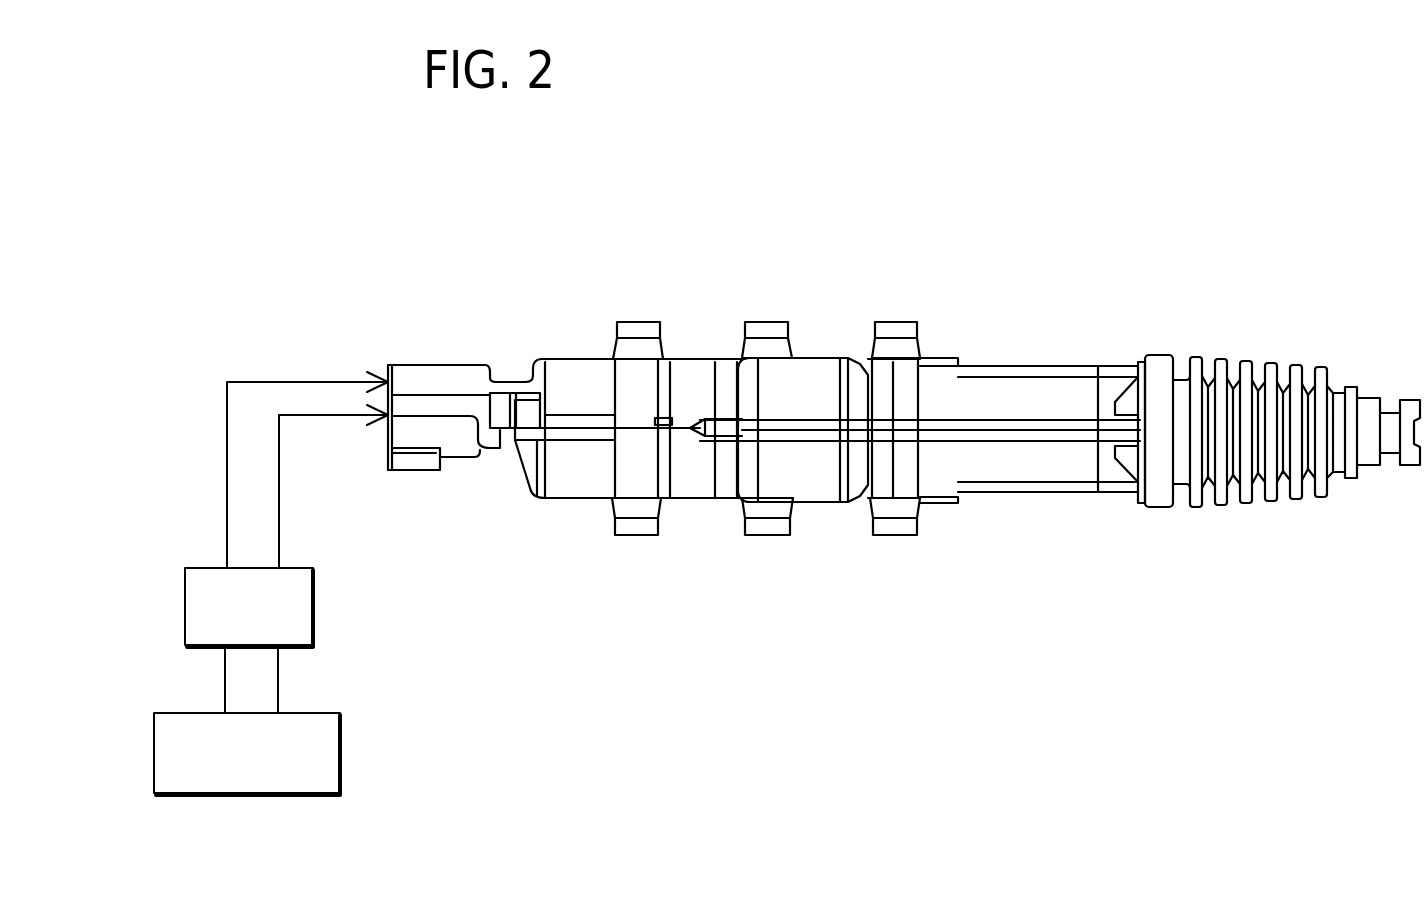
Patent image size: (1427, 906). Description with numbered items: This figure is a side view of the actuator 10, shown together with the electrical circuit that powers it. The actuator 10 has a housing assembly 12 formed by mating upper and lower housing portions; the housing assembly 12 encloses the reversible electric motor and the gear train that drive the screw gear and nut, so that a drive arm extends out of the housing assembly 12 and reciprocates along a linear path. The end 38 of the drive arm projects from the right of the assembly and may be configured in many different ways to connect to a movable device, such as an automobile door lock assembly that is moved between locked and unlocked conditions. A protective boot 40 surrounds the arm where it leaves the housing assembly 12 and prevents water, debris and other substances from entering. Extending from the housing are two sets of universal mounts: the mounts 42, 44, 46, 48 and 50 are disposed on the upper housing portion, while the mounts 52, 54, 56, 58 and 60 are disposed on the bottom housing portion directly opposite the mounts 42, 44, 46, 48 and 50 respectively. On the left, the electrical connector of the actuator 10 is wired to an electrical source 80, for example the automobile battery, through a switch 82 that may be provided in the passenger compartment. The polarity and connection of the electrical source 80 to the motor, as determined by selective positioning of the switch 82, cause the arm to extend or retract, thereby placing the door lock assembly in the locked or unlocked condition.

The actuator 10 is at (899, 181).
The housing assembly 12 is at (1054, 356).
The end of the drive arm 38 is at (1412, 398).
The protective boot 40 is at (1225, 357).
The universal mount 42 is at (945, 358).
The universal mount 44 is at (892, 322).
The universal mount 46 is at (770, 322).
The universal mount 48 is at (714, 358).
The universal mount 50 is at (640, 322).
The universal mount 52 is at (940, 505).
The universal mount 54 is at (890, 537).
The universal mount 56 is at (770, 537).
The universal mount 58 is at (700, 503).
The universal mount 60 is at (637, 537).
The electrical source 80 is at (340, 755).
The switch 82 is at (313, 608).